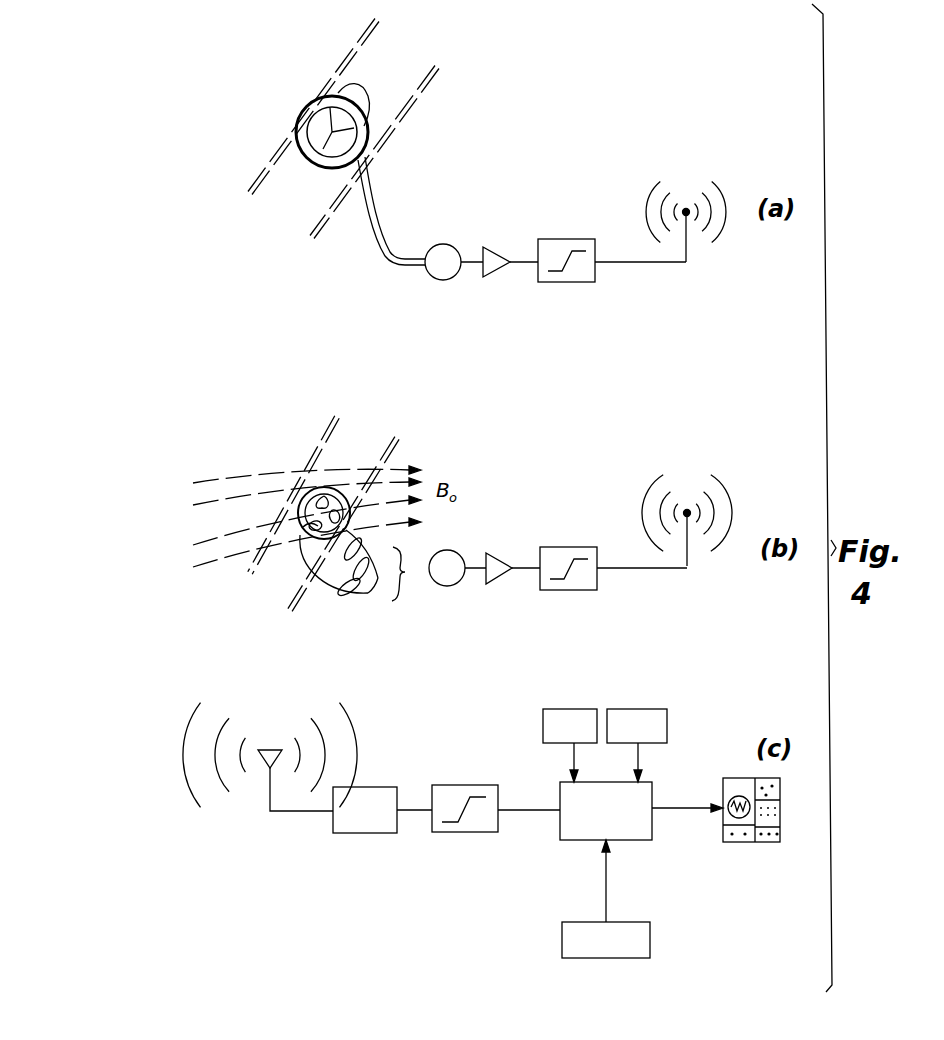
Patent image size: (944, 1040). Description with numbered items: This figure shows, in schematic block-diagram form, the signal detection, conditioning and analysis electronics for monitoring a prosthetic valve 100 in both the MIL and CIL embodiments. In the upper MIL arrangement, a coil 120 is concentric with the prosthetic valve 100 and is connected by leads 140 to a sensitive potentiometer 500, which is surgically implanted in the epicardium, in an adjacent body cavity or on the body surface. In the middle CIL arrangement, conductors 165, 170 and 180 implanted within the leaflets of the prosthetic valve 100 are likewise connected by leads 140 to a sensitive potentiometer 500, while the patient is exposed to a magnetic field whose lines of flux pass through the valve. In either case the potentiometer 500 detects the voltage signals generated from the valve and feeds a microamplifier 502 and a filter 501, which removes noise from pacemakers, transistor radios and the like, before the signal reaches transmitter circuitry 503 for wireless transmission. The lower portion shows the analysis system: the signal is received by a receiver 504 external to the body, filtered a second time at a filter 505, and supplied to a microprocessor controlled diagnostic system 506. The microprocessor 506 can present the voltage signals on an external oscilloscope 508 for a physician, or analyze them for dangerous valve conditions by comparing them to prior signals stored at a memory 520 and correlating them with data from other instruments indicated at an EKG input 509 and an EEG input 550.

The prosthetic valve 100 is at (326, 96).
The coil 120 is at (372, 140).
The leads 140 is at (383, 228).
The conductor 165 is at (313, 492).
The conductor 170 is at (326, 487).
The conductor 180 is at (303, 526).
The sensitive potentiometer 500 is at (435, 281).
The filter 501 is at (580, 282).
The microamplifier 502 is at (500, 274).
The transmitter circuitry 503 is at (688, 240).
The receiver 504 is at (355, 834).
The filter 505 is at (462, 833).
The microprocessor controlled diagnostic system 506 is at (575, 840).
The external oscilloscope 508 is at (730, 843).
The data from other instruments 509 is at (586, 709).
The stored prior signals 520 is at (570, 960).
The data from other instruments 550 is at (665, 708).